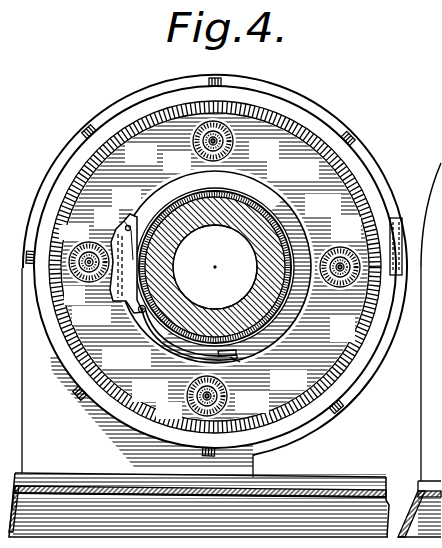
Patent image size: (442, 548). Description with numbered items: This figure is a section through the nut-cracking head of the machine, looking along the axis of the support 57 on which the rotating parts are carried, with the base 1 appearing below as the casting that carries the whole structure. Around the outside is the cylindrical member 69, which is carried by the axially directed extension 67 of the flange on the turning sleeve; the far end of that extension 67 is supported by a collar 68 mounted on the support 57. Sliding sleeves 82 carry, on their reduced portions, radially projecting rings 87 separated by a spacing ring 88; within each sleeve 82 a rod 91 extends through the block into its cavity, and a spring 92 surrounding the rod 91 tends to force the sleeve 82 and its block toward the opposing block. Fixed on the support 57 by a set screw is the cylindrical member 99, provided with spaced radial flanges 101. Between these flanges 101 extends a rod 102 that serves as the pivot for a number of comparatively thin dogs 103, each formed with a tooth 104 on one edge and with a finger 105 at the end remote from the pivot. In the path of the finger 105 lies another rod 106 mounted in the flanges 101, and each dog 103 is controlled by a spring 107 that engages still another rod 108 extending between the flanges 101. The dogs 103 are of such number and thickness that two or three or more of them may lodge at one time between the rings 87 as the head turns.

The base 1 is at (281, 514).
The support 57 is at (241, 221).
The axially directed extension 67 is at (265, 105).
The collar 68 is at (213, 267).
The cylindrical member 69 is at (136, 97).
The sleeve 82 is at (236, 145).
The radially projecting rings 87 is at (203, 149).
The spacing ring 88 is at (345, 253).
The rod 91 is at (202, 168).
The spring 92 is at (229, 118).
The cylindrical member 99 is at (276, 234).
The radial flanges 101 is at (268, 190).
The rod 102 is at (170, 340).
The dog 103 is at (130, 299).
The tooth 104 is at (89, 249).
The finger 105 is at (128, 226).
The rod 106 is at (126, 229).
The spring 107 is at (184, 358).
The rod 108 is at (237, 360).